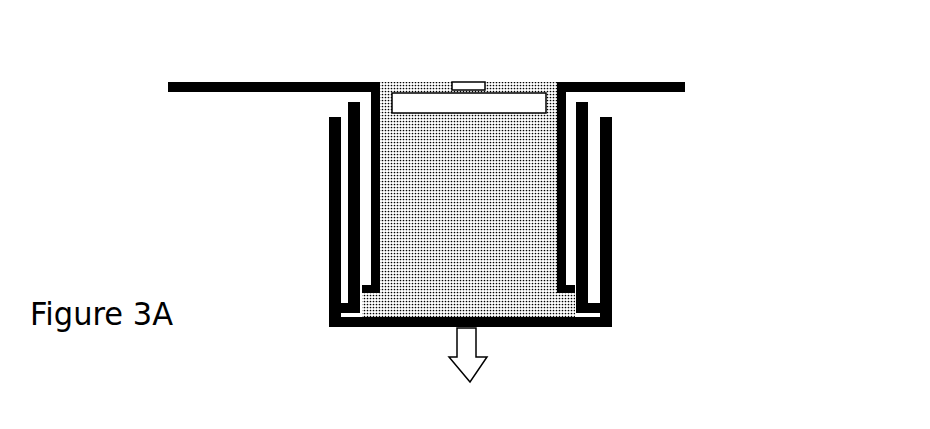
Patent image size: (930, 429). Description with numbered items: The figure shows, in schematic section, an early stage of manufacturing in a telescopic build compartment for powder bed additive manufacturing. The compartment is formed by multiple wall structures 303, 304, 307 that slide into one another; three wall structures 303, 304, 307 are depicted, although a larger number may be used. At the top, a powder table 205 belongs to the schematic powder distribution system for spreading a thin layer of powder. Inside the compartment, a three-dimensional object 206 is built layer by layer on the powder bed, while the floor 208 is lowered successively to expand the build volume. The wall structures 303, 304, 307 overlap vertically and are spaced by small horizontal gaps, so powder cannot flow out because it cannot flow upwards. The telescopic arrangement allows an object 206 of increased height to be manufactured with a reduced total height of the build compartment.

The powder table 205 is at (648, 82).
The three-dimensional object 206 is at (482, 80).
The floor 208 is at (375, 328).
The wall structure 303 is at (373, 237).
The wall structure 304 is at (348, 213).
The wall structure 307 is at (328, 167).